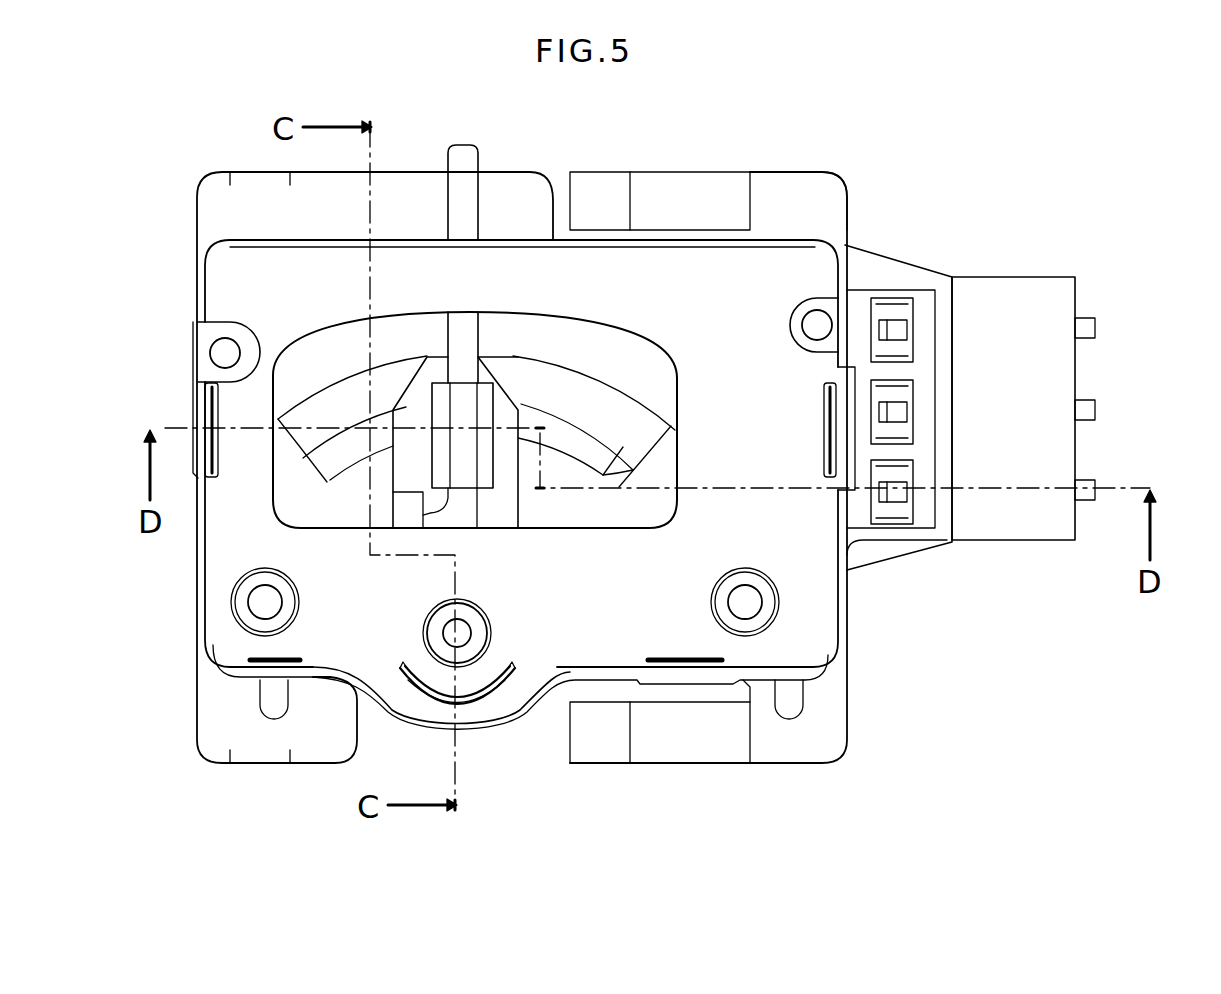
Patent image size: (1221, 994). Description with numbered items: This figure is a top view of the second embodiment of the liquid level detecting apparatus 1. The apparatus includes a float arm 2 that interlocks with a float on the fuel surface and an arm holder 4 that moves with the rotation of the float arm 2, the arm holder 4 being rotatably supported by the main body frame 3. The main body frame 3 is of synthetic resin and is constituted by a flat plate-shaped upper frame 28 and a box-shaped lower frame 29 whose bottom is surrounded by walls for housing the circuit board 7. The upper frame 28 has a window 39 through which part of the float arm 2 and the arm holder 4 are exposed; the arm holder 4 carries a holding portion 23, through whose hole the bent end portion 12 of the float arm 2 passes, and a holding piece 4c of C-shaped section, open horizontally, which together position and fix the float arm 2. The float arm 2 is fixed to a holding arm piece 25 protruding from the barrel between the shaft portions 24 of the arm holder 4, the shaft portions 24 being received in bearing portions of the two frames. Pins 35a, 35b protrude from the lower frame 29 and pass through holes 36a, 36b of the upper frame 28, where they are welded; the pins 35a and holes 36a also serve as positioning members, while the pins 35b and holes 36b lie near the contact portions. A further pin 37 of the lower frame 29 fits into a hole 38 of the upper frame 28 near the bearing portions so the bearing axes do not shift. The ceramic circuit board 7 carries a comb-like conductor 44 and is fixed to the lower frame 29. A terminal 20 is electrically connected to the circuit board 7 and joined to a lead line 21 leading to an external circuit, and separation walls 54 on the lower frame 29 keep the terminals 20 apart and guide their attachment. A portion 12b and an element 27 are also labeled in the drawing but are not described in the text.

The liquid level detecting apparatus 1 is at (878, 212).
The float arm 2 is at (462, 170).
The main body frame 3 is at (432, 248).
The arm holder 4 is at (550, 410).
The holding piece 4c is at (467, 397).
The circuit board 7 is at (323, 352).
The bent end portion 12 is at (387, 520).
The base plate portion 12b is at (470, 515).
The terminal 20 is at (908, 312).
The lead line 21 is at (1095, 322).
The holding portion 23 is at (380, 520).
The shaft portions 24 is at (478, 628).
The holding arm piece 25 is at (410, 385).
The pivot pin 27 is at (475, 640).
The upper frame 28 is at (762, 268).
The lower frame 29 is at (763, 183).
The pins 35a is at (263, 602).
The pins 35b is at (220, 355).
The holes 36a is at (255, 607).
The holes 36b is at (223, 350).
The pin 37 is at (488, 690).
The hole 38 is at (487, 712).
The window 39 is at (630, 495).
The conductor 44 is at (567, 380).
The separation walls 54 is at (897, 368).